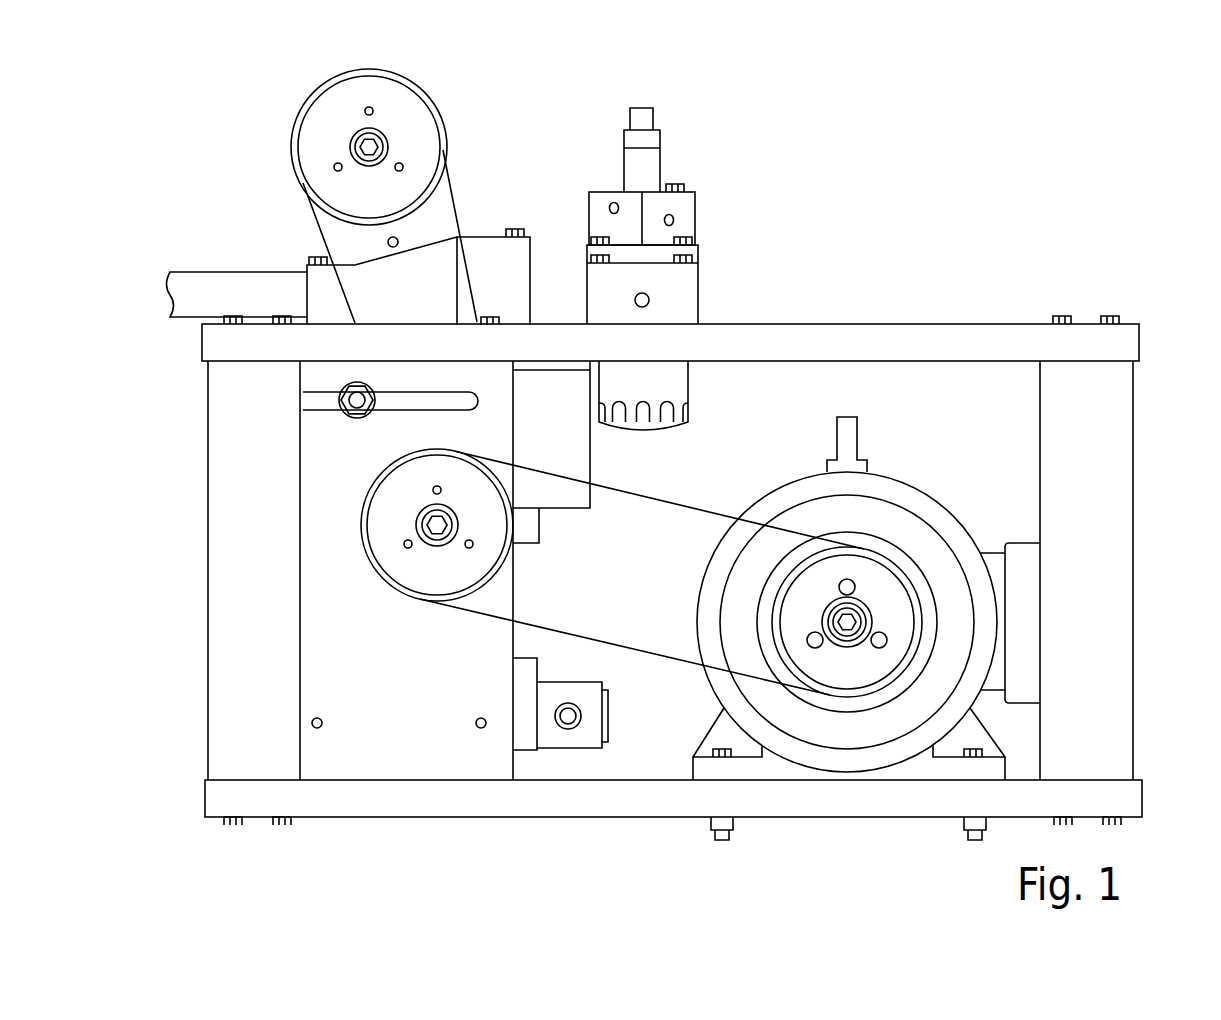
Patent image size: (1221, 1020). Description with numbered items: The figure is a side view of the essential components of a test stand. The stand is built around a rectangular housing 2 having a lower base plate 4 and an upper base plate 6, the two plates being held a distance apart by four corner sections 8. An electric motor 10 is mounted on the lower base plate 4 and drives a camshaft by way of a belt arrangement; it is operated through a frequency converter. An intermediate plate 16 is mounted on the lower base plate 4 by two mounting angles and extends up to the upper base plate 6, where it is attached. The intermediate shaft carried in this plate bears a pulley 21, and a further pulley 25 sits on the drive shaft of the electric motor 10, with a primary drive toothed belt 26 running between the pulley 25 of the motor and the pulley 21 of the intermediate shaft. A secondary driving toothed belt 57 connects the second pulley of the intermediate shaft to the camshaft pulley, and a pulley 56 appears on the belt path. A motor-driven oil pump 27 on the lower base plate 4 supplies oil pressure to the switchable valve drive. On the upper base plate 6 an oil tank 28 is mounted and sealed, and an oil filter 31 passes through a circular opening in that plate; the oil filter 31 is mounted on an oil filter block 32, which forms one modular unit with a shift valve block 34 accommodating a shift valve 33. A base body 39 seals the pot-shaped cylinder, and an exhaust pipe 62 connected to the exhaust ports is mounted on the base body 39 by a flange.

The housing 2 is at (993, 310).
The lower base plate 4 is at (637, 800).
The upper base plate 6 is at (893, 338).
The corner sections 8 is at (229, 732).
The electric motor 10 is at (830, 725).
The intermediate plate 16 is at (387, 743).
The pulley 21 is at (420, 575).
The pulley 25 is at (858, 667).
The primary drive toothed belt 26 is at (640, 652).
The oil pump 27 is at (553, 738).
The oil tank 28 is at (535, 380).
The oil filter 31 is at (680, 380).
The oil filter block 32 is at (676, 308).
The shift valve 33 is at (652, 163).
The shift valve block 34 is at (663, 205).
The base body 39 is at (476, 260).
The pulley 56 is at (380, 92).
The secondary driving toothed belt 57 is at (457, 183).
The exhaust pipe 62 is at (200, 288).